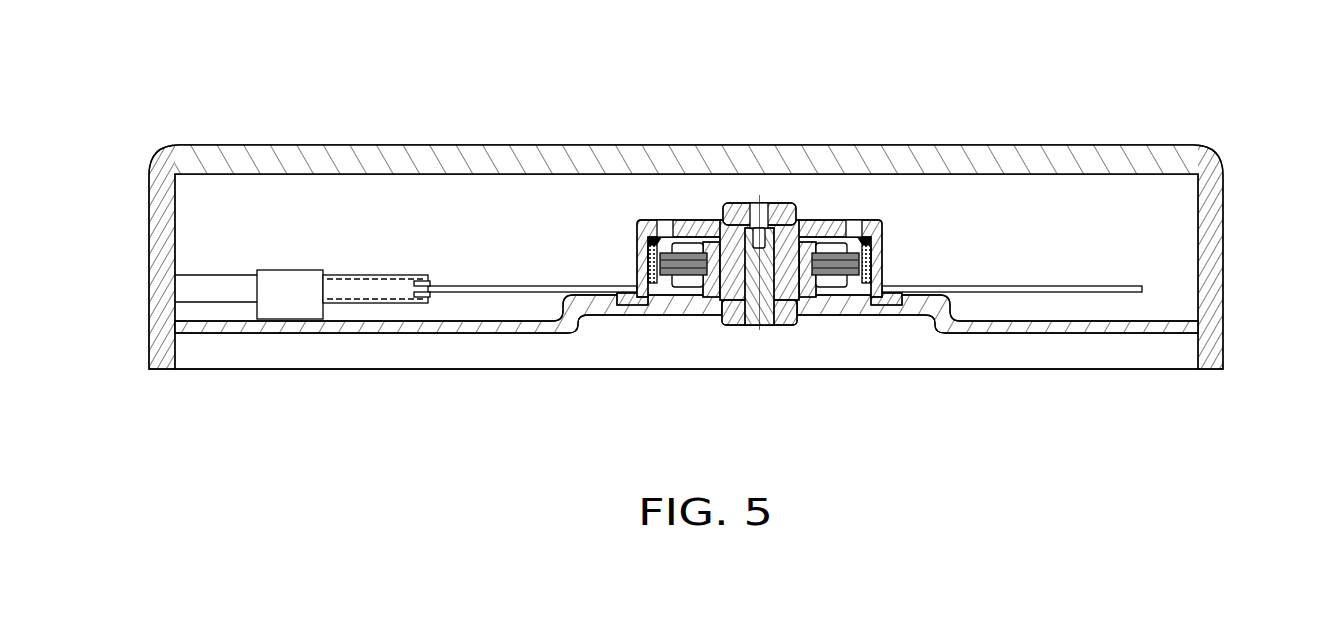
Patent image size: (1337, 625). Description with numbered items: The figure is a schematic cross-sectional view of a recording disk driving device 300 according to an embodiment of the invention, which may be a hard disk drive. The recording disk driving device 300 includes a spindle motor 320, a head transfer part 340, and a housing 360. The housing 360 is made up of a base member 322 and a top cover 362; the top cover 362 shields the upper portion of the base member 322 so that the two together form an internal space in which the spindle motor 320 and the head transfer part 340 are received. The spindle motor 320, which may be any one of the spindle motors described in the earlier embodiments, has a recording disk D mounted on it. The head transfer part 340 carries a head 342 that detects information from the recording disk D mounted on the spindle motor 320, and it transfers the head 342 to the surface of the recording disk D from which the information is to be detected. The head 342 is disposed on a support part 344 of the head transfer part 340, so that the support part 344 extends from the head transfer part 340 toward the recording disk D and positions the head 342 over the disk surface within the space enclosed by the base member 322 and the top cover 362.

The recording disk driving device 300 is at (249, 116).
The housing 360 is at (1225, 233).
The top cover 362 is at (625, 152).
The base member 322 is at (1210, 366).
The spindle motor 320 is at (733, 333).
The head transfer part 340 is at (293, 301).
The support part 344 is at (365, 304).
The head 342 is at (433, 298).
The recording disk D is at (1005, 289).